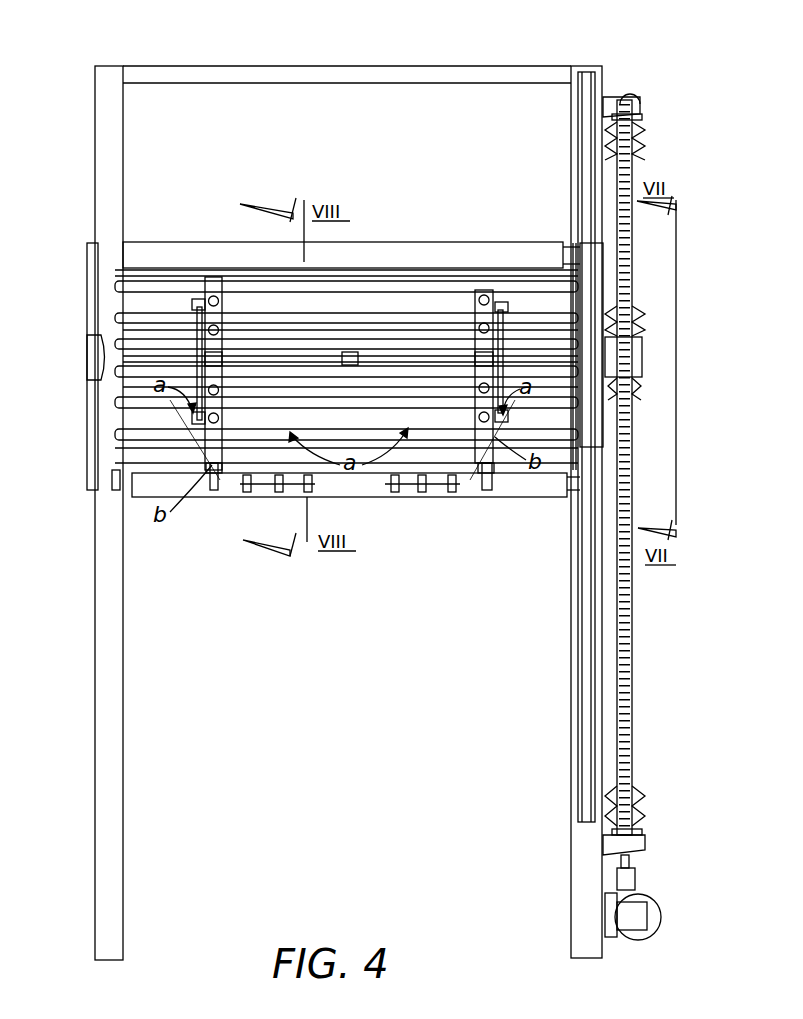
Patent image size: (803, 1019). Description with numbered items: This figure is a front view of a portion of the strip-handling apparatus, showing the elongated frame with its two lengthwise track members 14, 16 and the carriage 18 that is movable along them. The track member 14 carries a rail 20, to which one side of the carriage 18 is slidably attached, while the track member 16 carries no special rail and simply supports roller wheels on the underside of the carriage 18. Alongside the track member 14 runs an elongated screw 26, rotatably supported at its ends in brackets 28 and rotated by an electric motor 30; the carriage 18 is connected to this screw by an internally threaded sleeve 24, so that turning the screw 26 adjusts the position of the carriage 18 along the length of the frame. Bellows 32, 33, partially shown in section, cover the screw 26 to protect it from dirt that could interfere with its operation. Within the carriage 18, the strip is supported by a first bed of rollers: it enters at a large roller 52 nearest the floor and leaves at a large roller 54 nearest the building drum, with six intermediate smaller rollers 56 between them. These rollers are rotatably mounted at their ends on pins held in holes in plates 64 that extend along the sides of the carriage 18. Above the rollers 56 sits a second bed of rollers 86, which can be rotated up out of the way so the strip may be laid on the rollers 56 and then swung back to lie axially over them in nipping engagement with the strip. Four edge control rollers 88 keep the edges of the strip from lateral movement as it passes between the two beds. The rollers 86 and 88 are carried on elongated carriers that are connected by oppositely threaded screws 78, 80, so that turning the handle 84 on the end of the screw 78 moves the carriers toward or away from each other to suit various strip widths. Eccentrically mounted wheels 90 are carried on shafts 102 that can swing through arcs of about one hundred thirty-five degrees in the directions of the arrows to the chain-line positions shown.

The track member 14 is at (602, 80).
The track member 16 is at (104, 116).
The carriage 18 is at (420, 228).
The rail 20 is at (584, 74).
The internally threaded sleeve 24 is at (637, 360).
The elongated screw 26 is at (632, 237).
The brackets 28 is at (638, 100).
The electric motor 30 is at (648, 900).
The bellows 32 is at (648, 402).
The bellows 33 is at (645, 160).
The large roller 52 is at (525, 492).
The large roller 54 is at (505, 252).
The intermediate smaller rollers 56 is at (113, 343).
The plates 64 is at (95, 262).
The screw 78 is at (306, 355).
The screw 80 is at (398, 355).
The handle 84 is at (85, 358).
The rollers of the second bed 86 is at (263, 330).
The edge control rollers 88 is at (213, 300).
The eccentrically-mounted wheels 90 is at (306, 490).
The shafts 102 is at (228, 490).